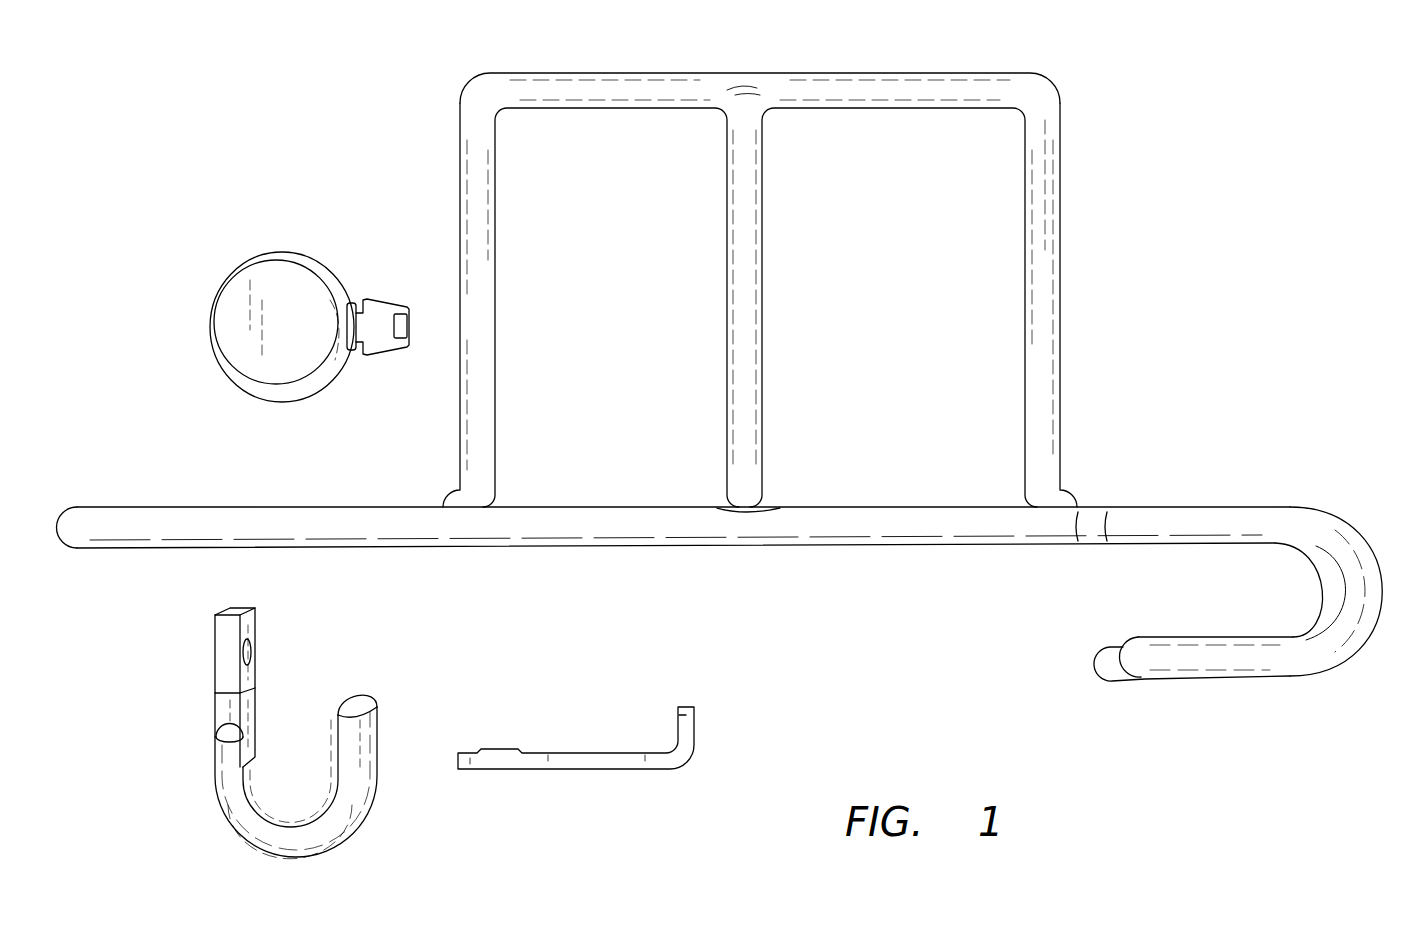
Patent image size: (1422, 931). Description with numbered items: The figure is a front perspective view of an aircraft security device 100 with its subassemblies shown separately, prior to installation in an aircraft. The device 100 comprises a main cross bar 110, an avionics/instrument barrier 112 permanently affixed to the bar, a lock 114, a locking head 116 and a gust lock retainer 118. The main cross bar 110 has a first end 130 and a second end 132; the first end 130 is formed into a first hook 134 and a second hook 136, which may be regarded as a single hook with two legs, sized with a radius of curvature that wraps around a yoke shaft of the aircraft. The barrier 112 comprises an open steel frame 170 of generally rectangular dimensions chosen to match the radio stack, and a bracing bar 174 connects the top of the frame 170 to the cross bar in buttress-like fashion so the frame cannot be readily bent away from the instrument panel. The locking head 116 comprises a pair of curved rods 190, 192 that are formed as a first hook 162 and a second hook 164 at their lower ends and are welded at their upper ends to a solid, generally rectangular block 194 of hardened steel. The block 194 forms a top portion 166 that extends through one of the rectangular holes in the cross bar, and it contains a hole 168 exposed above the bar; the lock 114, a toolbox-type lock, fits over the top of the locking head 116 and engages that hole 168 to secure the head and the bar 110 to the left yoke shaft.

The aircraft security device 100 is at (1112, 62).
The main cross bar 110 is at (1167, 500).
The avionics/instrument barrier 112 is at (1062, 225).
The lock 114 is at (282, 252).
The locking head 116 is at (297, 656).
The gust lock retainer 118 is at (592, 750).
The first end 130 is at (1237, 500).
The second end 132 is at (83, 507).
The first hook 134 is at (1318, 657).
The second hook 136 is at (1318, 592).
The first hook 162 is at (322, 840).
The second hook 164 is at (372, 778).
The top portion 166 is at (215, 635).
The hole 168 is at (250, 650).
The steel frame 170 is at (630, 73).
The bracing bar 174 is at (762, 282).
The curved rod 190 is at (232, 792).
The curved rod 192 is at (257, 735).
The solid block 194 is at (220, 712).